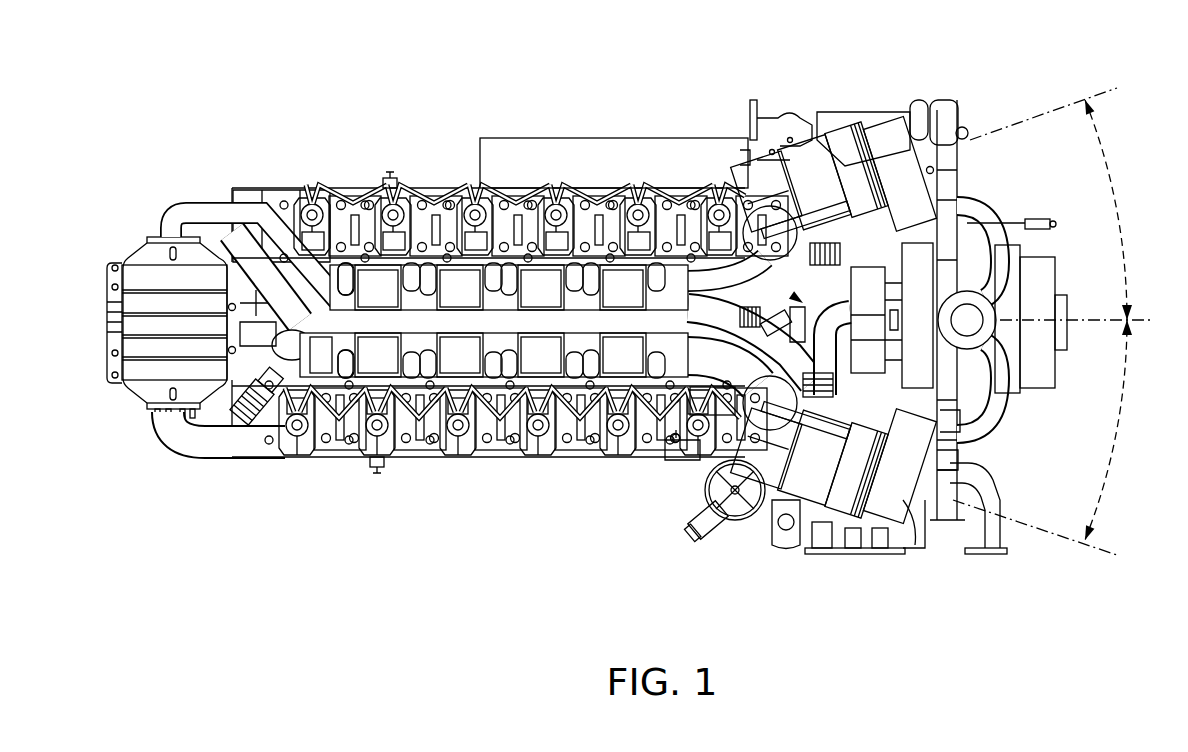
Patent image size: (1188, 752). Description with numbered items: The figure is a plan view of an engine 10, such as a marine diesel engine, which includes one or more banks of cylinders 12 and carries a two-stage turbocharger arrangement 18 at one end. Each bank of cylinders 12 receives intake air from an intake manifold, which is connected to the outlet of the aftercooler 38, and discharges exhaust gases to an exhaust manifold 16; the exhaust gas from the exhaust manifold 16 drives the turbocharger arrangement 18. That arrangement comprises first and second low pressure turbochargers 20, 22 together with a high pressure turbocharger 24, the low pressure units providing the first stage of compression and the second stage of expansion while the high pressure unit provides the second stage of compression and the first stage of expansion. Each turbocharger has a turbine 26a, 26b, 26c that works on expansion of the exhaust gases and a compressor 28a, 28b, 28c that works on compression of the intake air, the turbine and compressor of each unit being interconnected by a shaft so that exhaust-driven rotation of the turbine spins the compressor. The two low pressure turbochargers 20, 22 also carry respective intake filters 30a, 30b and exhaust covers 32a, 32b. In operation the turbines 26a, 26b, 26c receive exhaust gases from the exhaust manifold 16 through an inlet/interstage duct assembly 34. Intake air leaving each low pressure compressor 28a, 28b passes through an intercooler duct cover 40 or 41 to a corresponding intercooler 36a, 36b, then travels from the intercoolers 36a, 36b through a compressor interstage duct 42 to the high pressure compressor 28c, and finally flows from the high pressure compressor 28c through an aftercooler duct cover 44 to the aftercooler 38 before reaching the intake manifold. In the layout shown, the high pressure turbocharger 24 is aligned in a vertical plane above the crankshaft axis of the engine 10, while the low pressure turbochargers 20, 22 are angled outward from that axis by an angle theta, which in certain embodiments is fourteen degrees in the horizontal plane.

The engine 10 is at (628, 335).
The banks of cylinders 12 is at (510, 307).
The exhaust manifold 16 is at (492, 285).
The two-stage turbocharger arrangement 18 is at (884, 335).
The first low pressure turbocharger 20 is at (935, 152).
The second low pressure turbocharger 22 is at (932, 485).
The high pressure turbocharger 24 is at (950, 270).
The turbine 26a is at (808, 112).
The turbine 26b is at (772, 502).
The turbine 26c is at (940, 455).
The compressor 28a is at (850, 125).
The compressor 28b is at (832, 522).
The compressor 28c is at (1012, 312).
The intake filter 30a is at (893, 125).
The intake filter 30b is at (860, 532).
The exhaust cover 32a is at (746, 137).
The exhaust cover 32b is at (702, 470).
The inlet/interstage duct assembly 34 is at (690, 195).
The intercooler 36a is at (925, 140).
The intercooler 36b is at (912, 518).
The aftercooler 38 is at (952, 395).
The intercooler duct cover 40 is at (872, 122).
The intercooler duct cover 41 is at (875, 556).
The compressor interstage duct 42 is at (1005, 348).
The aftercooler duct cover 44 is at (962, 440).